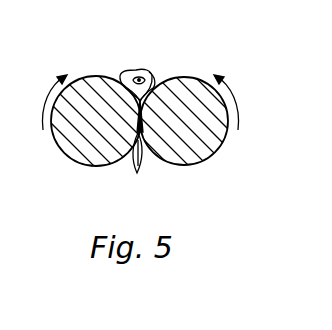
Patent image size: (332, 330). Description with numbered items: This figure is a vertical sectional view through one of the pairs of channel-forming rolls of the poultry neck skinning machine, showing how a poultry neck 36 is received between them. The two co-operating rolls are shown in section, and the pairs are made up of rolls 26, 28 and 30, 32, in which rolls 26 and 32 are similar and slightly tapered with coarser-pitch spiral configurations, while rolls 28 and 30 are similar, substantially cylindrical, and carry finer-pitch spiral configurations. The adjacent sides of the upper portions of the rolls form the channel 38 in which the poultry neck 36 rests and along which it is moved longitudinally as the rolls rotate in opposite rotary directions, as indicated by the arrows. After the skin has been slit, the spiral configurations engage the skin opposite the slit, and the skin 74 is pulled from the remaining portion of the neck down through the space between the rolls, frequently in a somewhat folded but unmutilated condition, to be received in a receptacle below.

The roll 26 is at (72, 152).
The roll 30 is at (90, 194).
The roll 28 is at (218, 152).
The roll 32 is at (249, 171).
The poultry neck 36 is at (142, 70).
The channel 38 is at (150, 91).
The skin 74 is at (141, 165).